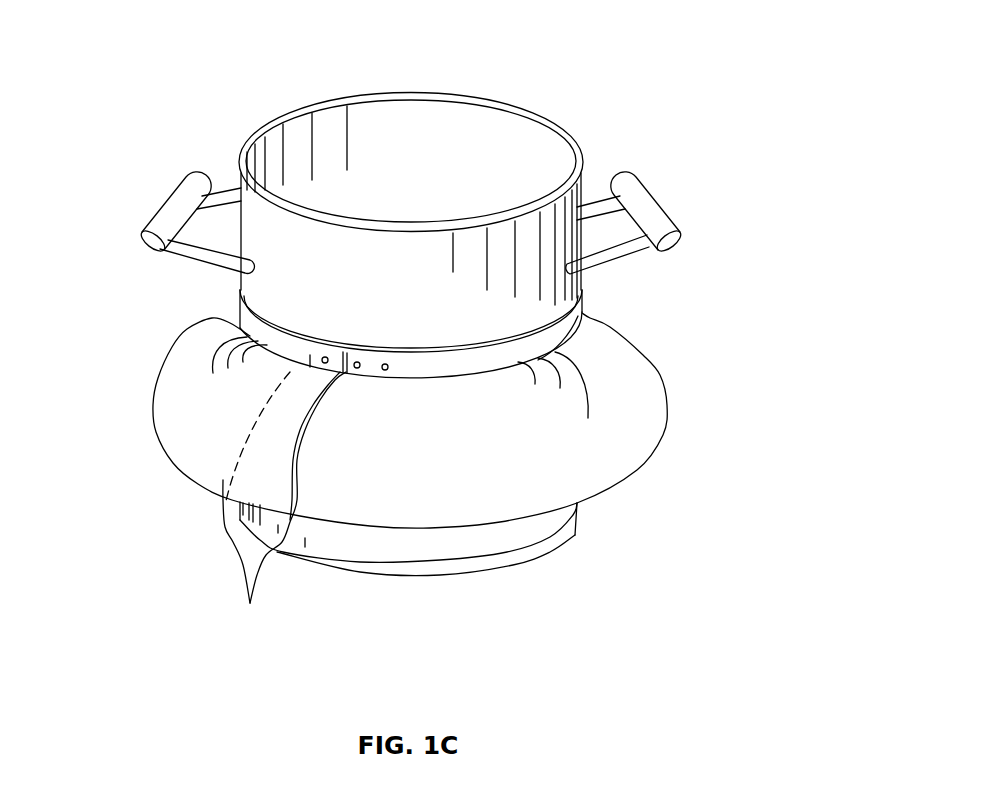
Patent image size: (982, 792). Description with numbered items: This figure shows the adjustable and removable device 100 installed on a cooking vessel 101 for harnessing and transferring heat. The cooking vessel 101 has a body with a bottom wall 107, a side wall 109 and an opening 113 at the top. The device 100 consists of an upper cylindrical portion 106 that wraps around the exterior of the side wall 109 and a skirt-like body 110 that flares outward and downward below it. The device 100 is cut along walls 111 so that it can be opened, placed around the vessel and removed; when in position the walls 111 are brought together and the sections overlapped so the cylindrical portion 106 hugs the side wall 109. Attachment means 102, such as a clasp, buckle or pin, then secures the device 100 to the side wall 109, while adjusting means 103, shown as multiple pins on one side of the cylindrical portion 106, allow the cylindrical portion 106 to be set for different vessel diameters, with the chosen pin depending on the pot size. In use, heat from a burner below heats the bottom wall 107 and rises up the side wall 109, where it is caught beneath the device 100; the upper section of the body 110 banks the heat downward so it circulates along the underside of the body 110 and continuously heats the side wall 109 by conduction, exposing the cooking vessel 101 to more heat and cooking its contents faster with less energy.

The adjustable and removable device 100 is at (170, 325).
The cooking vessel 101 is at (341, 67).
The attachment means 102 is at (325, 356).
The adjusting means (pins) 103 is at (390, 369).
The cylindrical portion 106 is at (573, 332).
The bottom wall 107 is at (513, 566).
The side wall 109 is at (240, 190).
The skirt-like body 110 is at (642, 428).
The walls 111 is at (284, 506).
The opening 113 is at (407, 124).